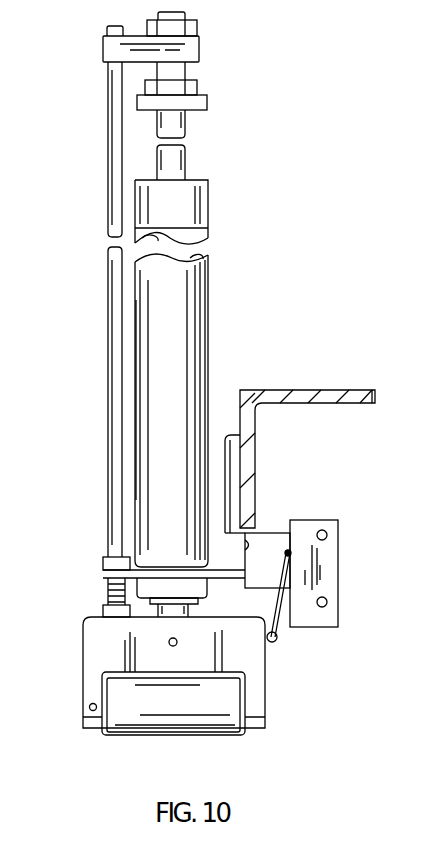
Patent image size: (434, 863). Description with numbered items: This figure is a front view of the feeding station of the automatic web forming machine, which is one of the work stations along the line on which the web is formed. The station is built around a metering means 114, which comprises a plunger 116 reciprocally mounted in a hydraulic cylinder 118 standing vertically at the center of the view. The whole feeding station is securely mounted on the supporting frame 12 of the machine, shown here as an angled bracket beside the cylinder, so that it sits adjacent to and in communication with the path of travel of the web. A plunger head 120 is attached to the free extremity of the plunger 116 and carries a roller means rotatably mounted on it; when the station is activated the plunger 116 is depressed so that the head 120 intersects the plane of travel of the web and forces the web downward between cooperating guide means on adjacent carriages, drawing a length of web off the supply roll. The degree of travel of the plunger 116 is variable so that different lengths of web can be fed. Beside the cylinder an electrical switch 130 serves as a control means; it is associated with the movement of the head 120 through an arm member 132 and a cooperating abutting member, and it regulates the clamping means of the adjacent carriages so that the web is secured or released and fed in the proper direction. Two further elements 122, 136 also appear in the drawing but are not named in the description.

The supporting frame 12 is at (293, 391).
The metering means 114 is at (223, 283).
The plunger 116 is at (188, 610).
The hydraulic cylinder 118 is at (198, 354).
The plunger head 120 is at (88, 646).
The cover plate 122 is at (148, 718).
The electrical switch 130 is at (333, 546).
The arm member 132 is at (286, 552).
The lever arm 136 is at (278, 642).